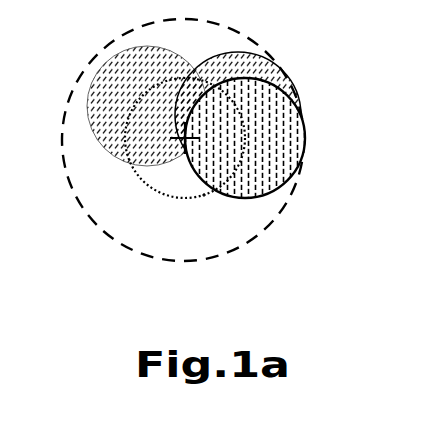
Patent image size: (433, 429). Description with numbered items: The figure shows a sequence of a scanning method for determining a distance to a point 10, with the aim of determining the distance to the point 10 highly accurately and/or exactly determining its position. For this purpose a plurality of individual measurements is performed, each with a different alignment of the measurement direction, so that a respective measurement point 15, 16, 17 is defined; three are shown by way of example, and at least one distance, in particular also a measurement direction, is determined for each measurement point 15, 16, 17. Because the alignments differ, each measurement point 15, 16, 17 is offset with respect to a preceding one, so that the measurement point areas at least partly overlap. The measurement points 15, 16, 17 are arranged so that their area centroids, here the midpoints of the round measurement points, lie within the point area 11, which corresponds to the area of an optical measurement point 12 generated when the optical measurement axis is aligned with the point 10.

The point 10 is at (185, 138).
The point area 11 is at (138, 173).
The optical measurement point 12 is at (204, 195).
The measurement point 15 is at (301, 147).
The measurement point 16 is at (277, 85).
The measurement point 17 is at (117, 73).